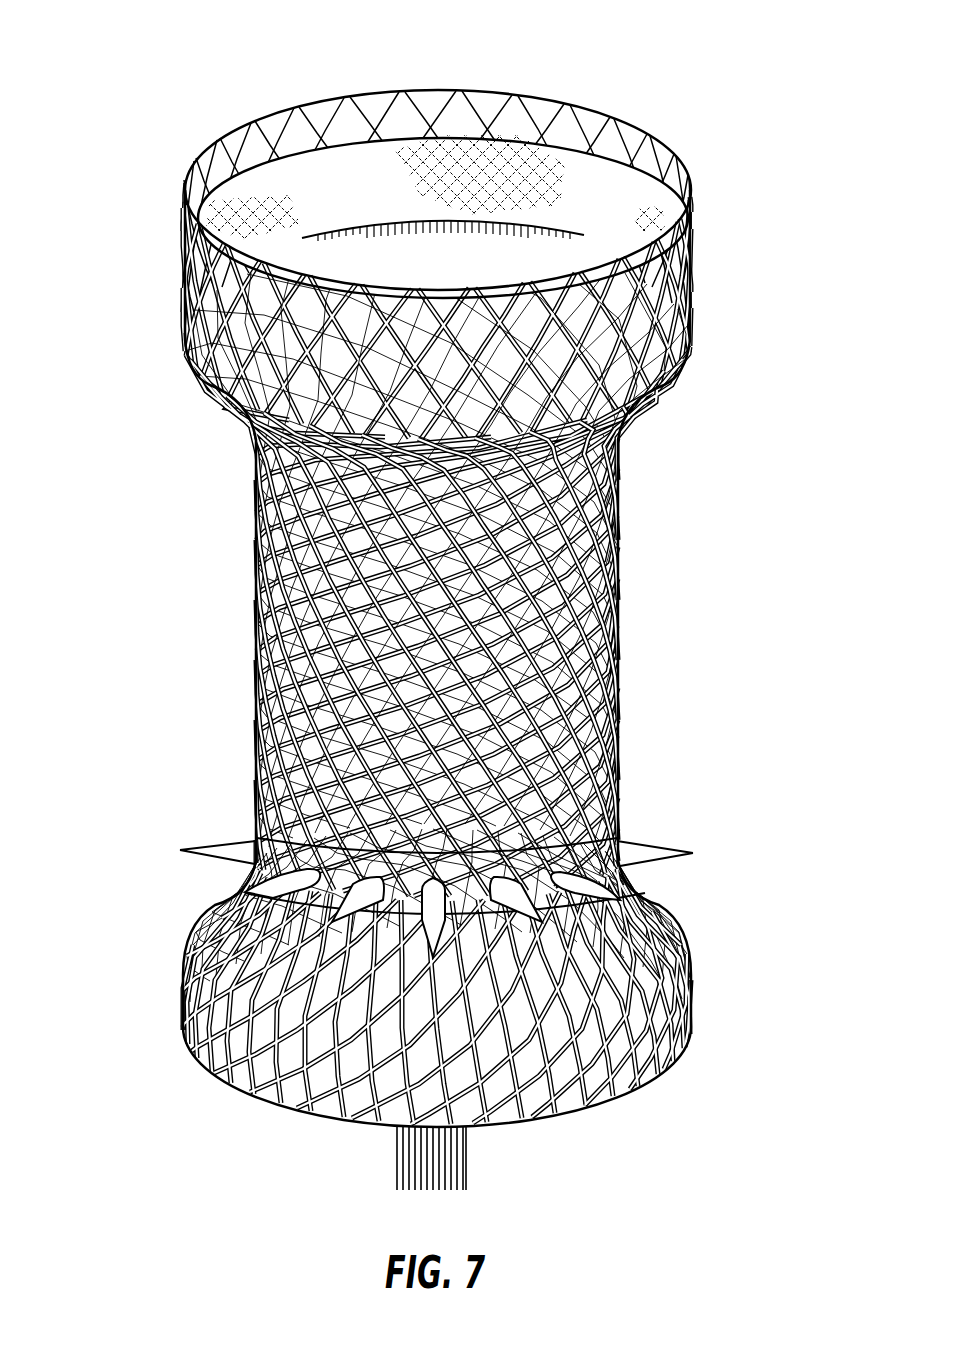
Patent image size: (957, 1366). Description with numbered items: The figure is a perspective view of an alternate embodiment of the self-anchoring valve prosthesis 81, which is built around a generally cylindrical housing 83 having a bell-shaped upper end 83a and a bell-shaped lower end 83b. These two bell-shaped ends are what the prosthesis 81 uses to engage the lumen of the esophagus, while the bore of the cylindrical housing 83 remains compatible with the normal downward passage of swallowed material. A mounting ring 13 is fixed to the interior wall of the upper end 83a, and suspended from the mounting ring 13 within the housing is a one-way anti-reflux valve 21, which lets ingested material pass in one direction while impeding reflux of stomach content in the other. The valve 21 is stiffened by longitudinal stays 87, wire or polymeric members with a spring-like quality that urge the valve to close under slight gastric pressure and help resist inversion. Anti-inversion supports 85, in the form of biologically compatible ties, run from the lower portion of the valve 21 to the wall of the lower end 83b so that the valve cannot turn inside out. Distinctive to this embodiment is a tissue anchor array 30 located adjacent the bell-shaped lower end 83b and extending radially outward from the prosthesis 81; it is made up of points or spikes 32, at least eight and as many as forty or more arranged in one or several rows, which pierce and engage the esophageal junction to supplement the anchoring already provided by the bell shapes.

The valve prosthesis 81 is at (406, 70).
The bell-shaped upper end 83a is at (600, 118).
The bell-shaped lower end 83b is at (687, 992).
The cylindrical housing 83 is at (255, 603).
The mounting ring 13 is at (185, 320).
The longitudinal stays 87 is at (537, 628).
The anti-inversion supports 85 is at (667, 923).
The tissue anchor array 30 is at (176, 824).
The spikes 32 is at (268, 877).
The one-way valve 21 is at (465, 1167).